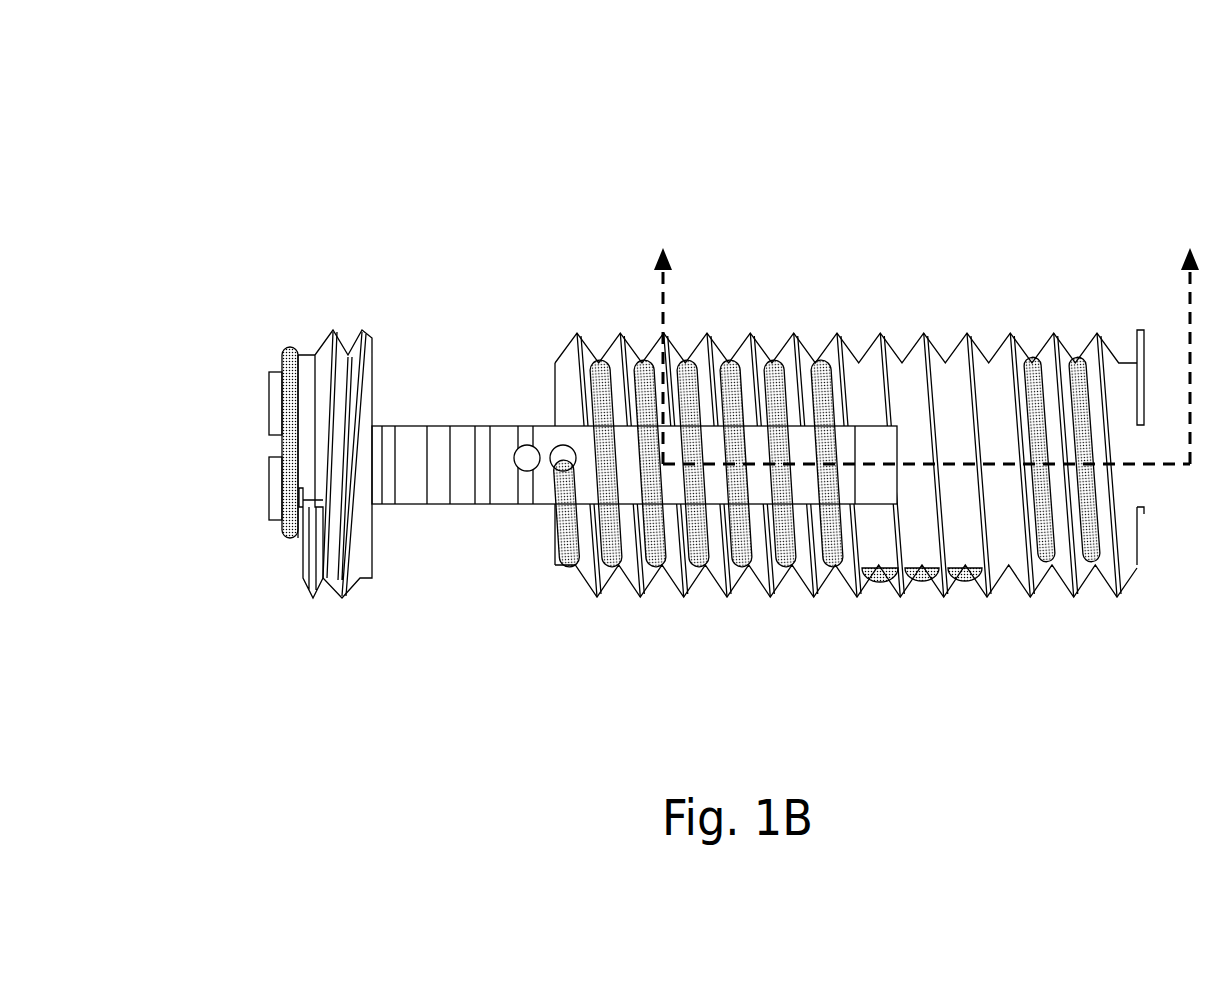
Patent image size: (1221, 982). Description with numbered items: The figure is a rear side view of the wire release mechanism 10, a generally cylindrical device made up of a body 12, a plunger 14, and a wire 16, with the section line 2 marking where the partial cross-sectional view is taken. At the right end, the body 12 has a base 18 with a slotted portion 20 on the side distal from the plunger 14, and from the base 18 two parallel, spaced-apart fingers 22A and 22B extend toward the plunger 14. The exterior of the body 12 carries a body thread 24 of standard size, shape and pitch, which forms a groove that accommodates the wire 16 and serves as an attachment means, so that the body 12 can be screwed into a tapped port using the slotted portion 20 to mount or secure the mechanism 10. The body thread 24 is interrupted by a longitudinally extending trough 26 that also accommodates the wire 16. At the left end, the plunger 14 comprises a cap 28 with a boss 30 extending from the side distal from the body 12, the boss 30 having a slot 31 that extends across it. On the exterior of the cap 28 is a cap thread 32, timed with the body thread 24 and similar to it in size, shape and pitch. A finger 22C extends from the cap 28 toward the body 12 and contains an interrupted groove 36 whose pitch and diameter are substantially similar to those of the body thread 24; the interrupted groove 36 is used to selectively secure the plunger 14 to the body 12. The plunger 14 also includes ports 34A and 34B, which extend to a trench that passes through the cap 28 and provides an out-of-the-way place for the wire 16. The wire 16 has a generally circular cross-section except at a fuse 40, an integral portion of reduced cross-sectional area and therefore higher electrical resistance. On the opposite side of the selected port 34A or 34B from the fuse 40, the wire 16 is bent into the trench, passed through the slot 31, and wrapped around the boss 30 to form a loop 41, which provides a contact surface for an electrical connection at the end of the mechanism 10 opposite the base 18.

The wire release mechanism 10 is at (408, 152).
The body 12 is at (930, 332).
The plunger 14 is at (634, 363).
The wire 16 is at (285, 330).
The base 18 is at (1088, 306).
The slotted portion 20 is at (1160, 306).
The finger 22A is at (708, 340).
The finger 22B is at (735, 578).
The finger 22C is at (452, 510).
The body thread 24 is at (848, 340).
The trough 26 is at (832, 562).
The cap 28 is at (334, 328).
The boss 30 is at (272, 410).
The slot 31 is at (275, 460).
The cap thread 32 is at (305, 580).
The port 34A is at (558, 470).
The port 34B is at (527, 472).
The interrupted groove 36 is at (437, 435).
The fuse 40 is at (618, 567).
The loop 41 is at (283, 522).
The section line 2 is at (926, 341).